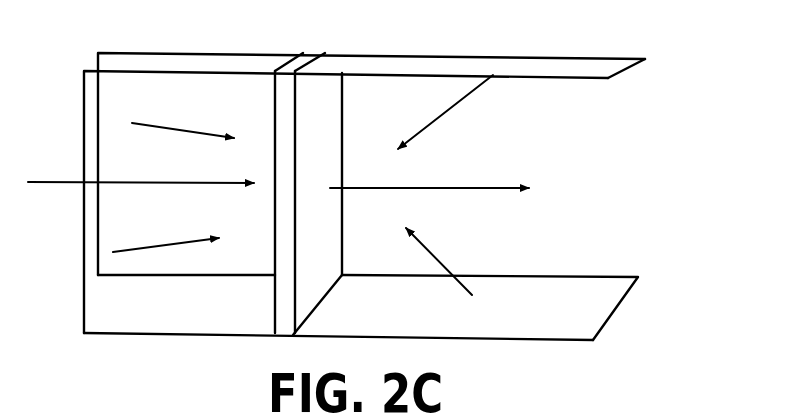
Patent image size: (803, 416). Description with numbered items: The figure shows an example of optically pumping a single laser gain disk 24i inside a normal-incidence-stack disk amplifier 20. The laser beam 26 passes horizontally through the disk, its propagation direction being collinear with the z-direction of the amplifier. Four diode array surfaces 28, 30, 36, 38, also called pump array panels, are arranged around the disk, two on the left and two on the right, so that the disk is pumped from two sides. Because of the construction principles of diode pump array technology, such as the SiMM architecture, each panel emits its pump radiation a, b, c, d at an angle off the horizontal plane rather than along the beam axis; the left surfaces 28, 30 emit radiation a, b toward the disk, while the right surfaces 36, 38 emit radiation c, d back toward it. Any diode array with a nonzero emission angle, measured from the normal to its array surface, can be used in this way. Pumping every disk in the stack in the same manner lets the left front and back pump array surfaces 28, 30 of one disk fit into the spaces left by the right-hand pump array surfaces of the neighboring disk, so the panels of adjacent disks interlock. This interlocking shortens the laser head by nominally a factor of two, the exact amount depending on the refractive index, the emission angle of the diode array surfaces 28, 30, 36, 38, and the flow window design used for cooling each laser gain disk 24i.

The normal-incidence-stack disk amplifier 20 is at (606, 140).
The laser gain disk 24i is at (315, 53).
The beam 26 is at (55, 184).
The diode array surface 28 is at (138, 340).
The diode array surface 30 is at (148, 52).
The diode array surface 36 is at (512, 345).
The diode array surface 38 is at (540, 60).
The pump radiation a is at (140, 248).
The pump radiation b is at (178, 128).
The pump radiation c is at (446, 268).
The pump radiation d is at (470, 95).